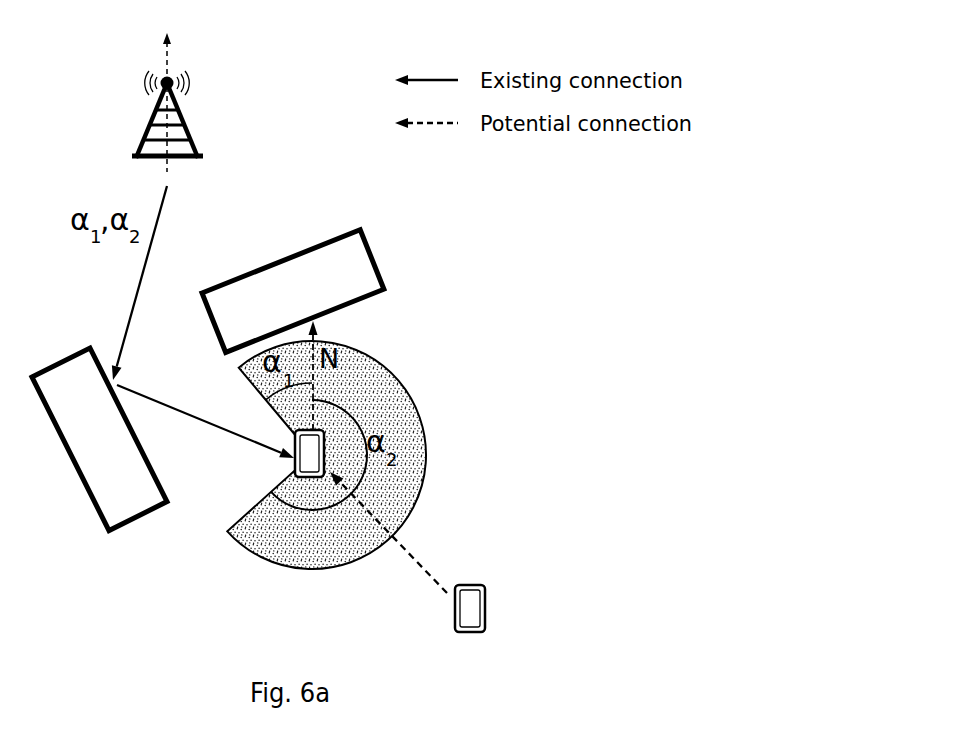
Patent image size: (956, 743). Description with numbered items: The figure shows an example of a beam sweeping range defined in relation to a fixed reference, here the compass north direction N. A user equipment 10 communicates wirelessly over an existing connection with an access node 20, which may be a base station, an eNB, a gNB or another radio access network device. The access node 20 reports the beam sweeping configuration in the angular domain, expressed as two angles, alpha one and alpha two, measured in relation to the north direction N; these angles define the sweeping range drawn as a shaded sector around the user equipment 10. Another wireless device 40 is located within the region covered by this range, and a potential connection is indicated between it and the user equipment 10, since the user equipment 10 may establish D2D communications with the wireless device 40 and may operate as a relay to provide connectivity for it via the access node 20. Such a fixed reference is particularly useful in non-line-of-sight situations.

The user equipment 10 is at (292, 468).
The access node 20 is at (190, 143).
The wireless device 40 is at (458, 610).